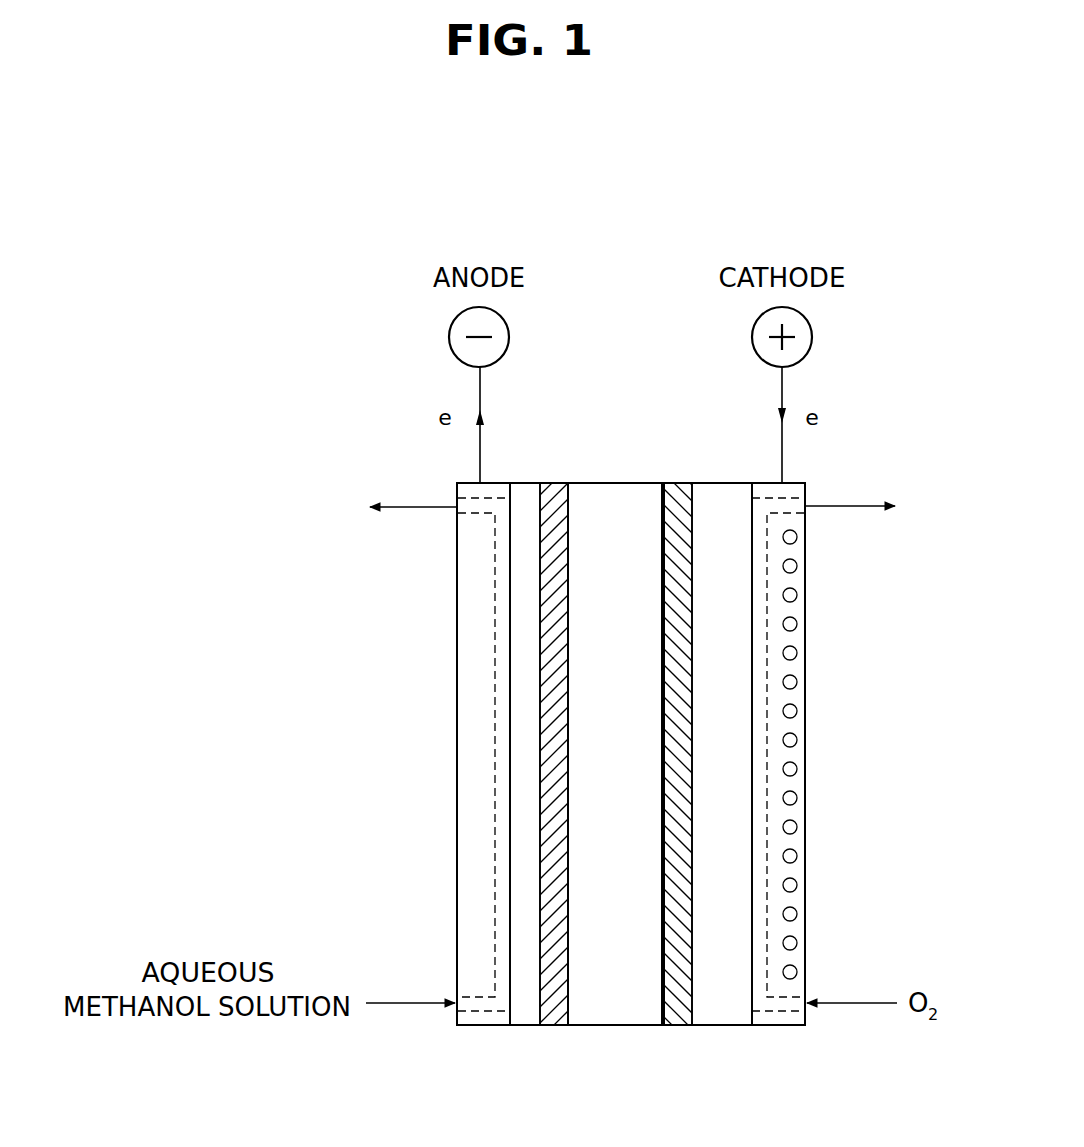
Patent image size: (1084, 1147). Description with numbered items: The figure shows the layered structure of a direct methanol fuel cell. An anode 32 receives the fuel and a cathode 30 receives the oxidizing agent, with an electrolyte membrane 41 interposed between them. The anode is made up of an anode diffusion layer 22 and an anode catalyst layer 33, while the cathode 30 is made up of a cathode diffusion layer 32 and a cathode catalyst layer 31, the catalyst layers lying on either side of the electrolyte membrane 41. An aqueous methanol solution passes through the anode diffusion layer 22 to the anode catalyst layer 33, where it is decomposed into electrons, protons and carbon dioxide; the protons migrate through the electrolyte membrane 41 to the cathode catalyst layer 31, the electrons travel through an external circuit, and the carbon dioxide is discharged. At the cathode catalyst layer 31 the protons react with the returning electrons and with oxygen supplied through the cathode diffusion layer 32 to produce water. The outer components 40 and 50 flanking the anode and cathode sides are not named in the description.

The anode diffusion layer 22 is at (523, 638).
The cathode 30 is at (672, 467).
The cathode catalyst layer 31 is at (675, 1008).
The cathode diffusion layer 32 is at (517, 467).
The anode catalyst layer 33 is at (553, 1008).
The fuel supply plate 40 is at (477, 725).
The electrolyte membrane 41 is at (615, 1003).
The oxidant supply plate 50 is at (782, 728).